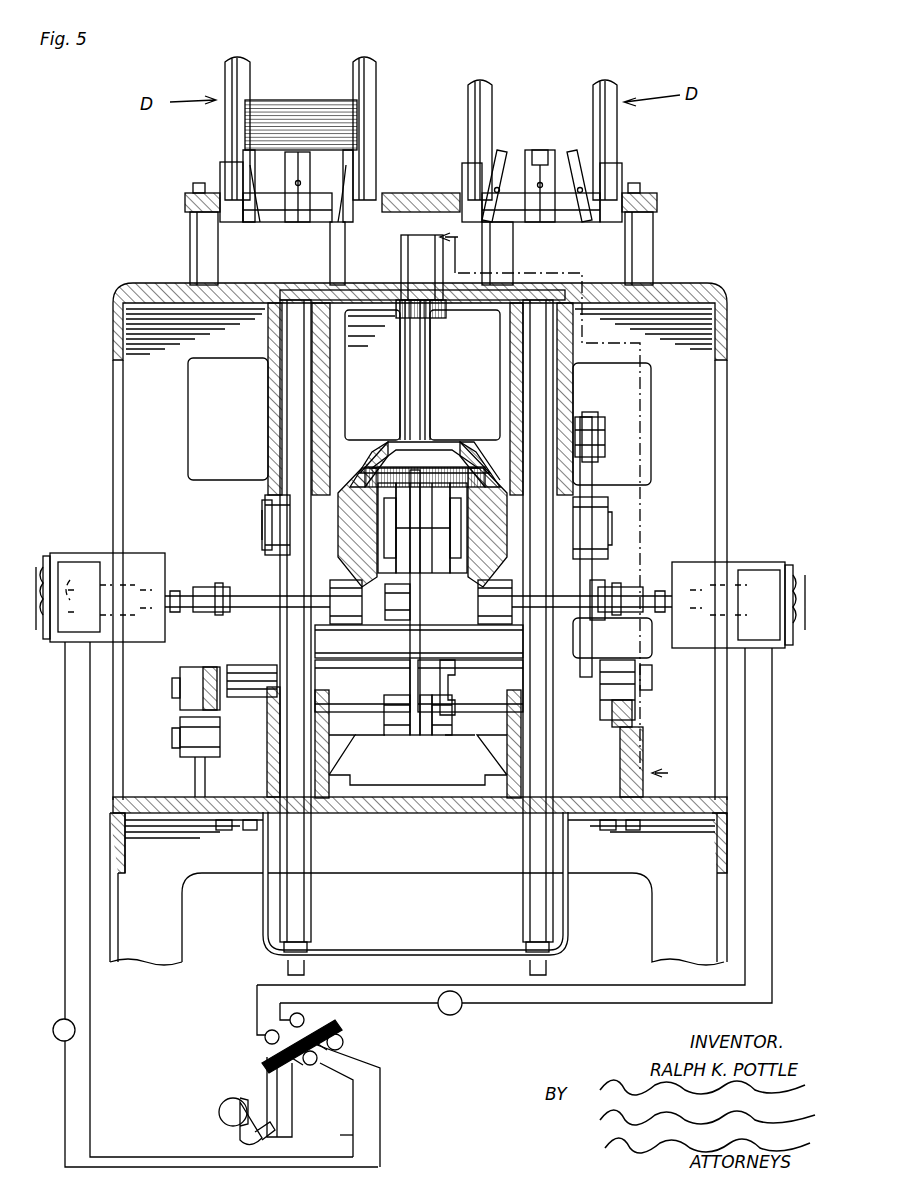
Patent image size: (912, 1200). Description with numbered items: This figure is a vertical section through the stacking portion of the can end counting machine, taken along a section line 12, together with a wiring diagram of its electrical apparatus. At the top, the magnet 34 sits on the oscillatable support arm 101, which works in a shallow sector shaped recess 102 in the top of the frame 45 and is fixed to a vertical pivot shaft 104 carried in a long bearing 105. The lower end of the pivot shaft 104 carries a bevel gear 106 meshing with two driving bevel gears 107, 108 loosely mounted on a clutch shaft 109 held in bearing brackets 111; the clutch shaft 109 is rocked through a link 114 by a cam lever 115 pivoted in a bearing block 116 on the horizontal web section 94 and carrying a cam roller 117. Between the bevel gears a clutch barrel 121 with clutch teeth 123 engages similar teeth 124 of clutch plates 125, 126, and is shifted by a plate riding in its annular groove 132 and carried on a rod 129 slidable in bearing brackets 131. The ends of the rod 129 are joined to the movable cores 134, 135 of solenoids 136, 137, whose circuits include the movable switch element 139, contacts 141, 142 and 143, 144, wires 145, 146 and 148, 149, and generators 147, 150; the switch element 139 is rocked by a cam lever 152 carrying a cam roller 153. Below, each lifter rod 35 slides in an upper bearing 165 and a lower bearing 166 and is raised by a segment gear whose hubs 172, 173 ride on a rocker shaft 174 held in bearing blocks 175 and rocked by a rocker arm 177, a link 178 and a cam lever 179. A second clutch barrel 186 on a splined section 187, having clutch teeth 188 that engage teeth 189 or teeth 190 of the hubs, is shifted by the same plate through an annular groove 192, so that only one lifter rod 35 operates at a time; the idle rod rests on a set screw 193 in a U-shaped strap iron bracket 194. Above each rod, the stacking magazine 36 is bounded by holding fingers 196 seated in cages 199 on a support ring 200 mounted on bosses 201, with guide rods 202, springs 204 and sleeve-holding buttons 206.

The section line 12 is at (568, 508).
The magnet 34 is at (405, 243).
The lifter rod 35 is at (296, 396).
The stacking magazine 36 is at (260, 95).
The frame 45 is at (727, 333).
The horizontal web section 94 is at (405, 813).
The support arm 101 is at (415, 312).
The sector shaped recess 102 is at (492, 308).
The pivot shaft 104 is at (420, 440).
The bearing 105 is at (398, 365).
The bevel gear 106 is at (450, 455).
The driving bevel gear 107 is at (362, 480).
The driving bevel gear 108 is at (480, 482).
The clutch shaft 109 is at (266, 518).
The bearing bracket 111 is at (272, 548).
The link 114 is at (592, 418).
The cam lever 115 is at (592, 468).
The bearing block 116 is at (630, 797).
The cam roller 117 is at (612, 619).
The clutch barrel 121 is at (410, 485).
The clutch teeth 123 is at (449, 551).
The clutch teeth 124 is at (374, 511).
The clutch plate 125 is at (386, 525).
The clutch plate 126 is at (458, 525).
The rod 129 is at (412, 612).
The bearing bracket 131 is at (347, 605).
The annular groove 132 is at (462, 452).
The movable core 134 is at (190, 595).
The movable core 135 is at (645, 595).
The solenoid 136 is at (135, 568).
The solenoid 137 is at (750, 570).
The movable switch element 139 is at (268, 1082).
The electric contact 141 is at (310, 1066).
The electric contact 142 is at (344, 1042).
The electric contact 143 is at (264, 1038).
The electric contact 144 is at (305, 1022).
The wire 145 is at (330, 1136).
The wire 146 is at (380, 1120).
The generator 147 is at (55, 1038).
The wire 148 is at (375, 990).
The wire 149 is at (397, 1003).
The generator 150 is at (460, 1010).
The cam lever 152 is at (238, 1133).
The cam roller 153 is at (220, 1108).
The upper bearing 165 is at (272, 335).
The lower bearing 166 is at (270, 760).
The hub 172 is at (362, 686).
The hub 173 is at (470, 686).
The rocker shaft 174 is at (640, 688).
The bearing block 175 is at (648, 668).
The rocker arm 177 is at (185, 743).
The link 178 is at (206, 777).
The cam lever 179 is at (207, 690).
The clutch barrel 186 is at (404, 602).
The splined section 187 is at (438, 706).
The clutch teeth 188 is at (388, 718).
The teeth 189 is at (385, 682).
The teeth 190 is at (465, 672).
The annular groove 192 is at (412, 748).
The set screw 193 is at (287, 966).
The U-shaped strap iron bracket 194 is at (263, 897).
The holding finger 196 is at (300, 178).
The cage 199 is at (228, 170).
The support ring 200 is at (185, 204).
The boss 201 is at (198, 250).
The guide rod 202 is at (240, 70).
The spring 204 is at (350, 165).
The button 206 is at (338, 190).